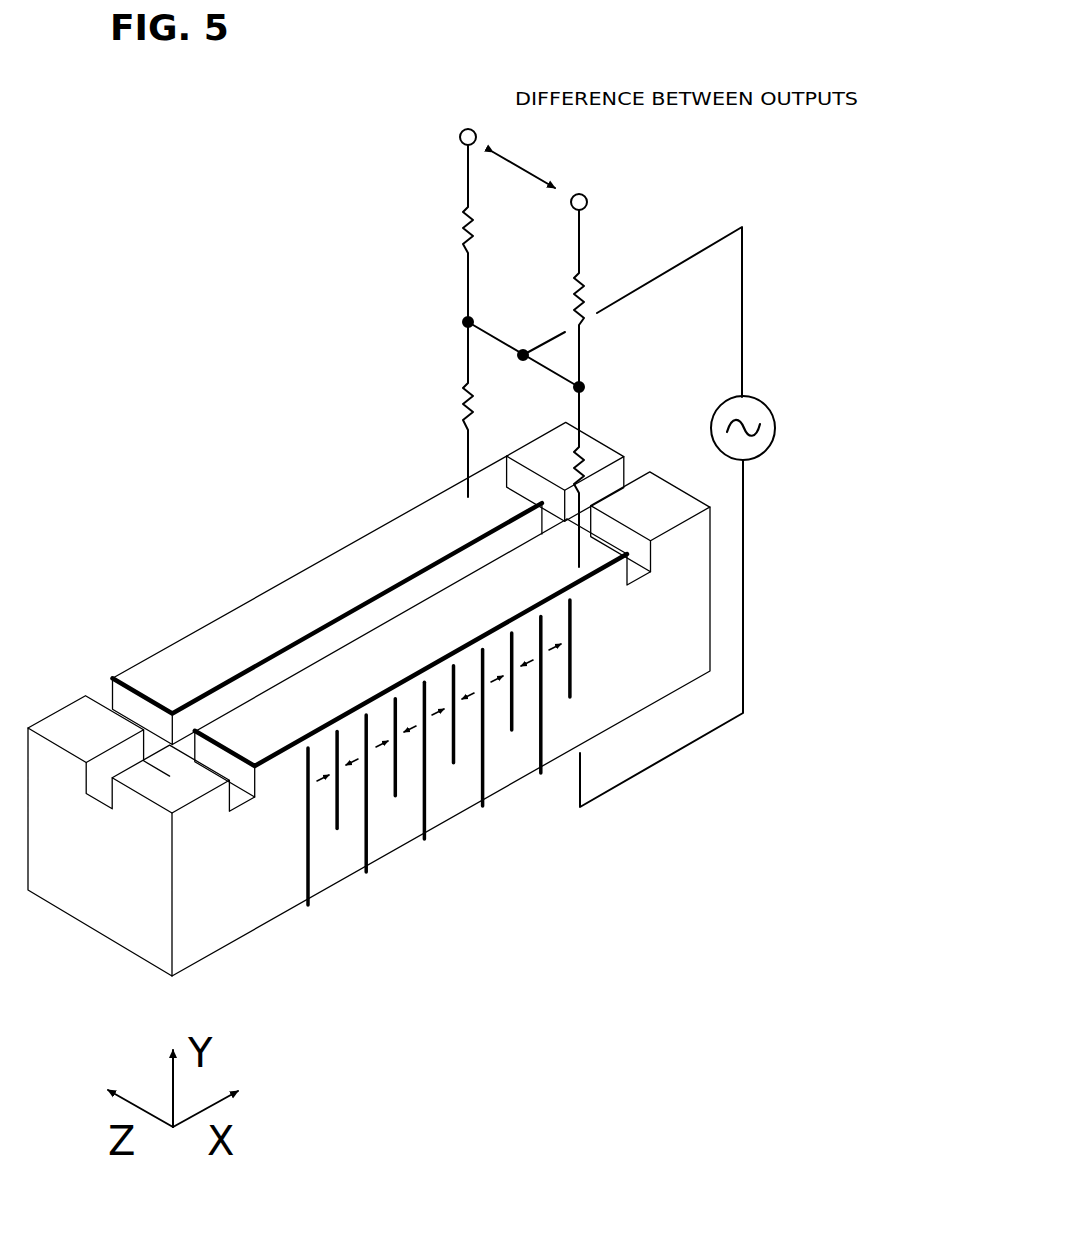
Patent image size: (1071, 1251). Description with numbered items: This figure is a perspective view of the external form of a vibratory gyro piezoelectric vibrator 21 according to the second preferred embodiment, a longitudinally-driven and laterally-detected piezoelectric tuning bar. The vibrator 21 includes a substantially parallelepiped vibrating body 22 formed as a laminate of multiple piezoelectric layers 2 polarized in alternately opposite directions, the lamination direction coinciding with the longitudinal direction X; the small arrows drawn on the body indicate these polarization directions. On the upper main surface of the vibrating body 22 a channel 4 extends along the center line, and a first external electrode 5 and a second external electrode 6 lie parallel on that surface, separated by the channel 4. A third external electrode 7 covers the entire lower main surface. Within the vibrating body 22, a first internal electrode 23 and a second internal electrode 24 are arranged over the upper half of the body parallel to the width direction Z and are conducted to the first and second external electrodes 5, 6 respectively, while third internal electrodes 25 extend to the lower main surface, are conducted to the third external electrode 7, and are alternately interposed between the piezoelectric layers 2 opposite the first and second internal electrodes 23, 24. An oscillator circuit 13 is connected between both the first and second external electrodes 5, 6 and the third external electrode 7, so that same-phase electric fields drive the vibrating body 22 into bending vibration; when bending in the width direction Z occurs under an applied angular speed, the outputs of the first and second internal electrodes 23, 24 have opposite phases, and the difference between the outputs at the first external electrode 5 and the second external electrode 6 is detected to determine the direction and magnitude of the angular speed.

The piezoelectric layer 2 is at (412, 768).
The channel 4 is at (370, 627).
The first external electrode 5 is at (267, 633).
The second external electrode 6 is at (460, 612).
The third external electrode 7 is at (350, 878).
The oscillator circuit 13 is at (767, 402).
The vibratory gyro piezoelectric vibrator 21 is at (365, 624).
The vibrating body 22 is at (255, 885).
The first internal electrode 23 is at (453, 727).
The second internal electrode 24 is at (568, 759).
The third internal electrode 25 is at (427, 778).